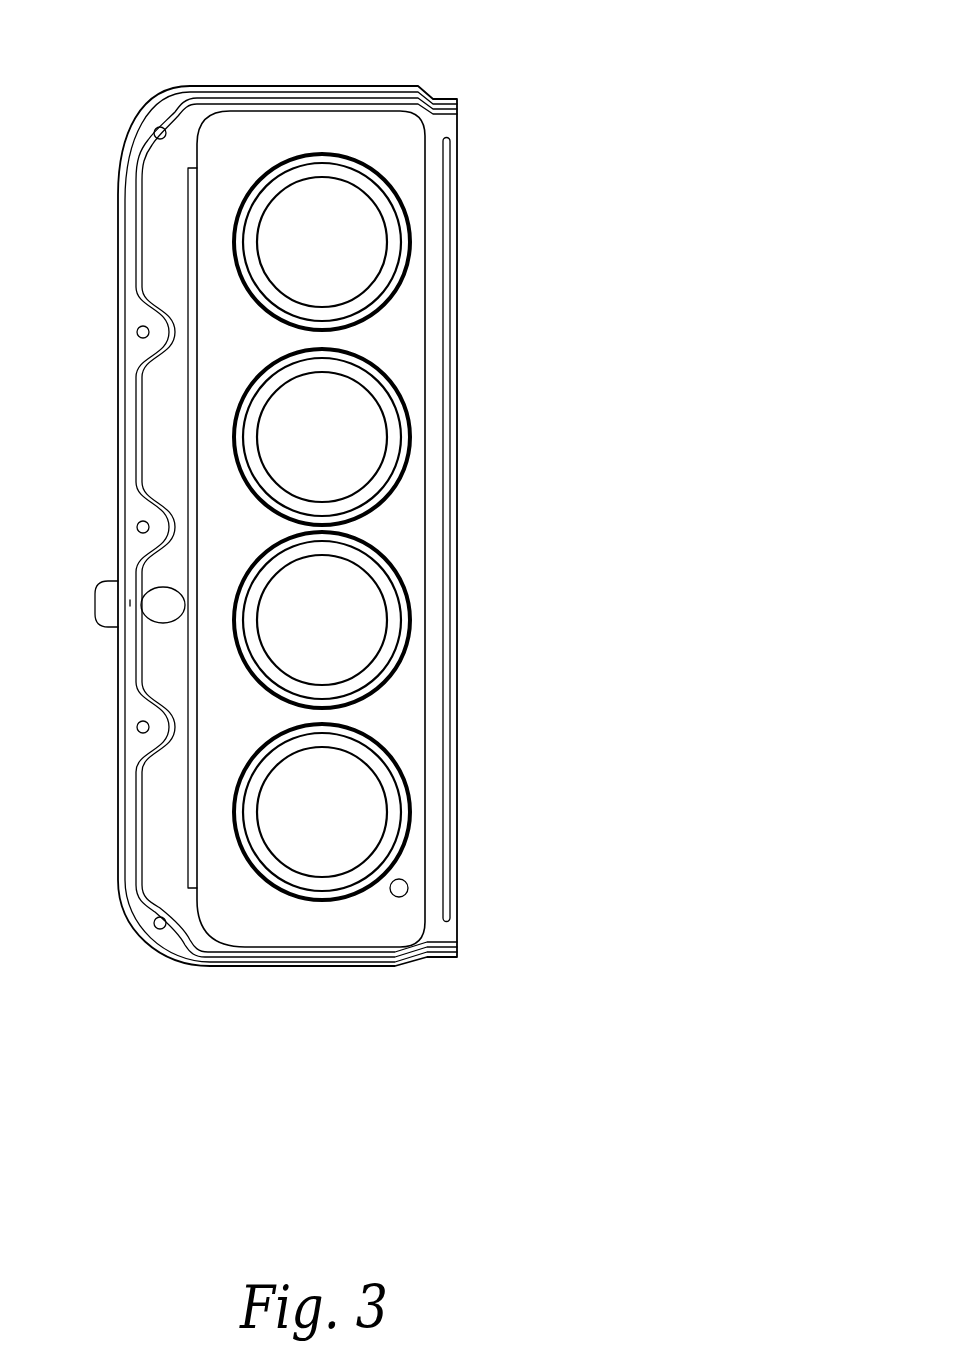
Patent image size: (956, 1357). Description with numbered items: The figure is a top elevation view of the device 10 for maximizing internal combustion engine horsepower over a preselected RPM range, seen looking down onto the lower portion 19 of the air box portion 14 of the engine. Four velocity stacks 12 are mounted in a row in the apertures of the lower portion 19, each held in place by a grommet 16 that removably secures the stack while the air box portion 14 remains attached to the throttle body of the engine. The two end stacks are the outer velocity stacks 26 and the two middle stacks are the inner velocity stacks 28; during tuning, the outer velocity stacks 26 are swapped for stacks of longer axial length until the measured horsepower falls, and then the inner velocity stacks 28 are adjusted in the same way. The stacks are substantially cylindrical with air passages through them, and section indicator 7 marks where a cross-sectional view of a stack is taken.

The device 10 is at (660, 212).
The lower portion 19 is at (301, 128).
The air box portion 14 is at (457, 956).
The outer velocity stacks 26 is at (385, 181).
The inner velocity stacks 28 is at (383, 378).
The grommets 16 is at (398, 286).
The velocity stacks 12 is at (263, 283).
The section line 7- 7 is at (322, 290).